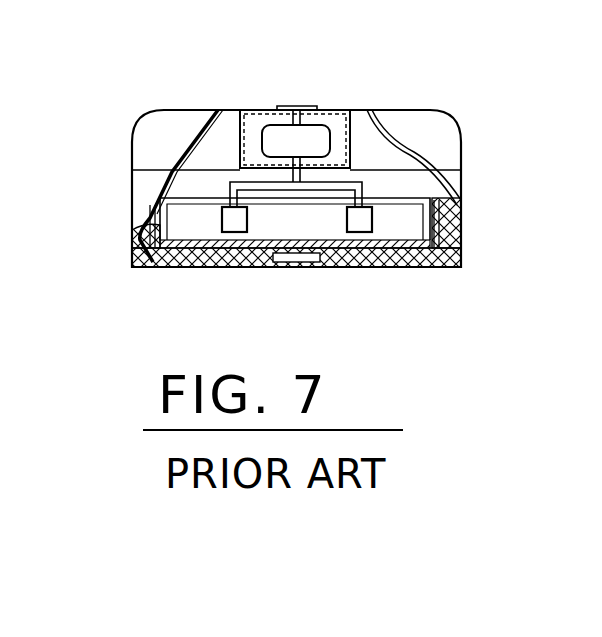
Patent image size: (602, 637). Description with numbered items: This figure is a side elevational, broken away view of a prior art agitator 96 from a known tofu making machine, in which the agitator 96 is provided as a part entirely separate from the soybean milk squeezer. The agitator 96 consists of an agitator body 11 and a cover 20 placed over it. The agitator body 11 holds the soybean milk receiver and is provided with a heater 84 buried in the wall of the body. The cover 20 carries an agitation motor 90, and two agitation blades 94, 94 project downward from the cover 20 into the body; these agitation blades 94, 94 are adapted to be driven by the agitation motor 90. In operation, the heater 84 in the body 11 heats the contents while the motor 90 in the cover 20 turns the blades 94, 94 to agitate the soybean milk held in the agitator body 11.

The cover 20 is at (133, 136).
The agitator body 11 is at (132, 242).
The agitation motor 90 is at (321, 129).
The agitation blades 94 is at (237, 232).
The heater 84 is at (435, 267).
The agitator 96 is at (565, 185).